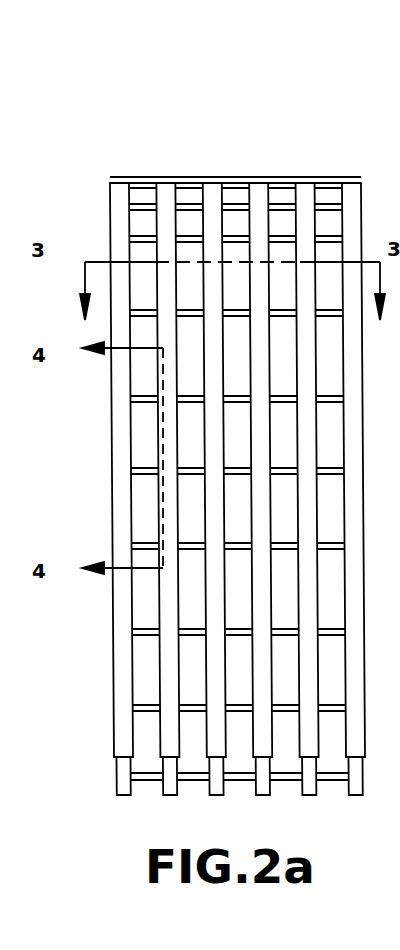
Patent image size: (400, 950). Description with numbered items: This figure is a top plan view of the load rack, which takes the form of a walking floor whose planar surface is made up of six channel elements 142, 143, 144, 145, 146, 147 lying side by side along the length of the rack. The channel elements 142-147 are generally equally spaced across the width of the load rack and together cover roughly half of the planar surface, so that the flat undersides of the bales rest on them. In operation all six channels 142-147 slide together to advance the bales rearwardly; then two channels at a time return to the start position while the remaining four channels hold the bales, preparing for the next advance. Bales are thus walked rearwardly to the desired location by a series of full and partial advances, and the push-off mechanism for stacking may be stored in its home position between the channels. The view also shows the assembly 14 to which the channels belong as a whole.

The electrode structure 14 is at (229, 436).
The channel element 142 is at (113, 203).
The channel element 143 is at (163, 196).
The channel element 144 is at (209, 196).
The channel element 145 is at (257, 194).
The channel element 146 is at (305, 195).
The channel element 147 is at (353, 210).